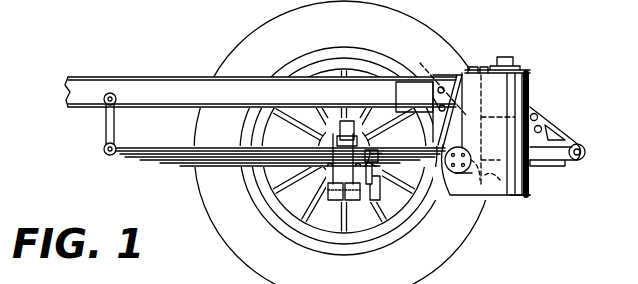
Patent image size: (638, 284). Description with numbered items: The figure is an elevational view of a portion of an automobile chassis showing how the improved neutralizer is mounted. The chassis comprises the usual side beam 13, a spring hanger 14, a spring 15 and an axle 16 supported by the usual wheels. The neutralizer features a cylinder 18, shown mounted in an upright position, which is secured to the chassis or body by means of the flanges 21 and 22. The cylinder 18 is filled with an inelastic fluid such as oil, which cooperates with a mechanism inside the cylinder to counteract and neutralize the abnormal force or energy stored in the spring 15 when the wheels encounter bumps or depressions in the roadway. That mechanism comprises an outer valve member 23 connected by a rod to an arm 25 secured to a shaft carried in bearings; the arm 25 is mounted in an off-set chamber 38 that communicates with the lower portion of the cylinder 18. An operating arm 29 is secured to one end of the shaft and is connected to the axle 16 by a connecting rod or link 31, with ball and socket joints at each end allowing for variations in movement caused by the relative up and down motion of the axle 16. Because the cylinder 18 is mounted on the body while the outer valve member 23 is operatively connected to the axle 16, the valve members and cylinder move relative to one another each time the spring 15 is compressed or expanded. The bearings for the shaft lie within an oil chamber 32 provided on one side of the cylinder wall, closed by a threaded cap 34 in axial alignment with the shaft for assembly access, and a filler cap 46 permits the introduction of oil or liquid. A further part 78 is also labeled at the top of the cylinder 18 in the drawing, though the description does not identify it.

The side beam 13 is at (133, 93).
The spring hanger 14 is at (564, 134).
The spring 15 is at (176, 163).
The axle 16 is at (335, 196).
The cylinder 18 is at (513, 97).
The flange 21 is at (532, 114).
The flange 22 is at (450, 88).
The outer valve member 23 is at (532, 194).
The arm 25 is at (493, 180).
The operating arm 29 is at (418, 152).
The connecting rod 31 is at (382, 184).
The oil chamber 32 is at (434, 78).
The threaded cap 34 is at (458, 172).
The off-set chamber 38 is at (467, 175).
The filler cap 46 is at (478, 68).
The cap 78 is at (506, 58).